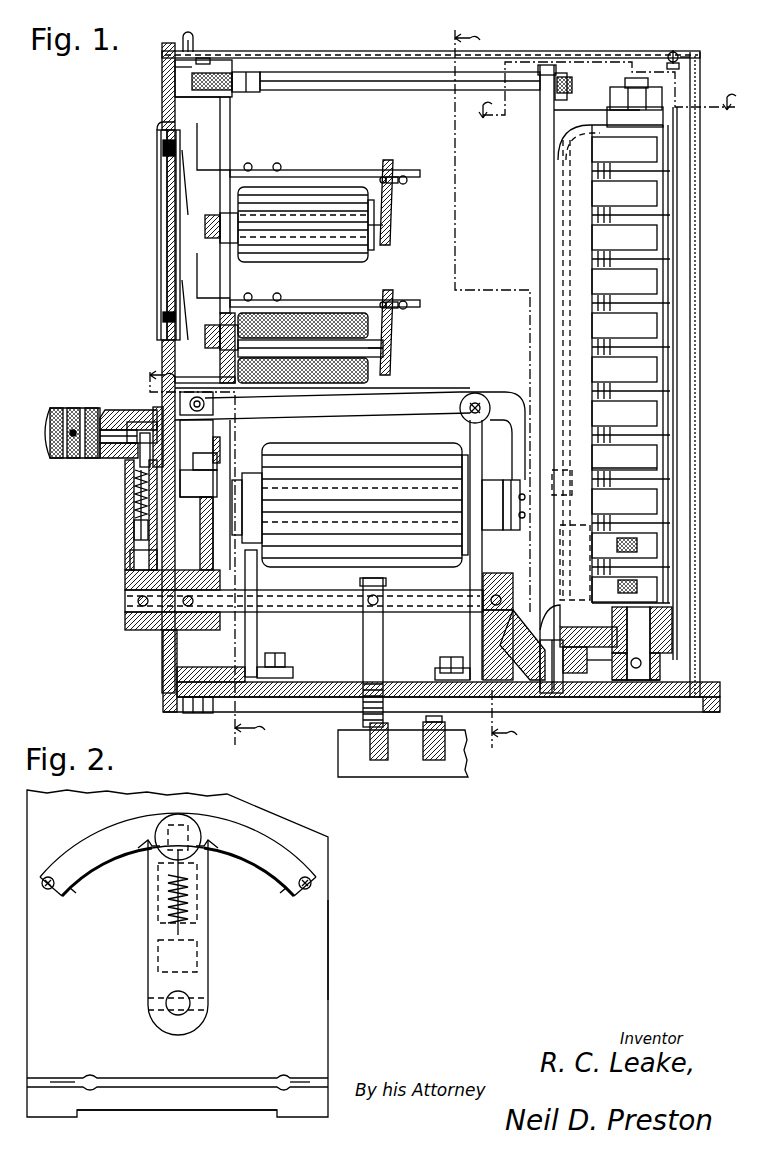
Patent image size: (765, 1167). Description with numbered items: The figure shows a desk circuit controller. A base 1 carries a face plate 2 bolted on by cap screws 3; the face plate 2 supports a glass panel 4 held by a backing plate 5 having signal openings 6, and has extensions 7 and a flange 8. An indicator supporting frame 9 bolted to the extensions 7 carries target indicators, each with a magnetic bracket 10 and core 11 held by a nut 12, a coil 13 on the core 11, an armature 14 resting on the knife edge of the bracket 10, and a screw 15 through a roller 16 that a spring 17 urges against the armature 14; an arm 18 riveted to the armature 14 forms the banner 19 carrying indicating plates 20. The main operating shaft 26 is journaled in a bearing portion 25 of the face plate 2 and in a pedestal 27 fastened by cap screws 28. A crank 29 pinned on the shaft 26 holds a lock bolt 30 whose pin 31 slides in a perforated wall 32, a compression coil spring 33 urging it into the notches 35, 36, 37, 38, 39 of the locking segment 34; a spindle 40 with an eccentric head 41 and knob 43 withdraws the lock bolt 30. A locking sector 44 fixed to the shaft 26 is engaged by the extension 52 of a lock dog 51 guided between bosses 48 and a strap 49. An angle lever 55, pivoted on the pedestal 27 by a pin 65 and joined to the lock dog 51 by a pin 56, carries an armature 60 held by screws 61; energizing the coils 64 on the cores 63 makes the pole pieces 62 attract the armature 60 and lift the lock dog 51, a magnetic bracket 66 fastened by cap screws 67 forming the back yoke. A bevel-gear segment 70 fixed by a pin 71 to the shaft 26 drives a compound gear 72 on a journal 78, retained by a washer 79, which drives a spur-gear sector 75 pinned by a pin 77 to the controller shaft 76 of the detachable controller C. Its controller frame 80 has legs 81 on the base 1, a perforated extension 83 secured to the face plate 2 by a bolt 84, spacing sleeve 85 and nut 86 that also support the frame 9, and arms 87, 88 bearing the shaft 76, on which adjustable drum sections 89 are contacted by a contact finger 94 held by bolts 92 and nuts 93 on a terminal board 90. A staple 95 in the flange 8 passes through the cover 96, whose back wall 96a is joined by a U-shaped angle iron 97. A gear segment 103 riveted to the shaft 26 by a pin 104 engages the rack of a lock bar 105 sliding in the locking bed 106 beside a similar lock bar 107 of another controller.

In FIG. 1, the base 1 is at (338, 690).
In FIG. 2, the base 1 is at (163, 1107).
In FIG. 1, the face plate 2 is at (170, 665).
In FIG. 2, the face plate 2 is at (315, 962).
In FIG. 1, the cap screws 3 is at (197, 723).
In FIG. 1, the glass panel 4 is at (167, 233).
In FIG. 1, the backing plate 5 is at (178, 240).
In FIG. 1, the signal openings 6 is at (157, 297).
In FIG. 1, the extensions 7 is at (204, 350).
In FIG. 1, the flange 8 is at (203, 62).
In FIG. 1, the indicator supporting frame 9 is at (229, 128).
In FIG. 1, the bracket 10 is at (342, 300).
In FIG. 1, the core 11 is at (378, 362).
In FIG. 1, the nut 12 is at (208, 340).
In FIG. 1, the coil 13 is at (302, 320).
In FIG. 1, the armature 14 is at (389, 342).
In FIG. 1, the screw 15 is at (407, 302).
In FIG. 1, the roller 16 is at (386, 302).
In FIG. 1, the spring 17 is at (395, 310).
In FIG. 1, the arm 18 is at (266, 300).
In FIG. 1, the banner 19 is at (185, 310).
In FIG. 1, the indicating plates 20 is at (192, 285).
In FIG. 1, the bearing portion 25 is at (165, 630).
In FIG. 1, the main operating shaft 26 is at (128, 603).
In FIG. 2, the main operating shaft 26 is at (186, 1008).
In FIG. 1, the pedestal 27 is at (478, 566).
In FIG. 1, the cap screws 28 is at (450, 658).
In FIG. 1, the crank 29 is at (130, 576).
In FIG. 2, the crank 29 is at (158, 930).
In FIG. 1, the lock bolt 30 is at (140, 442).
In FIG. 1, the pin 31 is at (135, 487).
In FIG. 1, the perforated wall 32 is at (135, 540).
In FIG. 1, the compression coil spring 33 is at (133, 508).
In FIG. 1, the locking segment 34 is at (157, 410).
In FIG. 2, the locking segment 34 is at (100, 852).
In FIG. 2, the notch 35 is at (72, 887).
In FIG. 2, the notch 36 is at (145, 850).
In FIG. 2, the notch 37 is at (185, 840).
In FIG. 2, the notch 38 is at (213, 850).
In FIG. 2, the notch 39 is at (283, 887).
In FIG. 1, the spindle 40 is at (117, 414).
In FIG. 1, the head 41 is at (124, 414).
In FIG. 1, the operating knob 43 is at (47, 418).
In FIG. 2, the operating knob 43 is at (160, 825).
In FIG. 1, the locking sector 44 is at (214, 562).
In FIG. 1, the bosses 48 is at (214, 463).
In FIG. 1, the strap 49 is at (220, 442).
In FIG. 1, the lock dog 51 is at (213, 422).
In FIG. 1, the extension 52 is at (217, 487).
In FIG. 1, the angle lever 55 is at (431, 406).
In FIG. 1, the pin 56 is at (206, 404).
In FIG. 1, the armature 60 is at (508, 520).
In FIG. 1, the screws 61 is at (526, 515).
In FIG. 1, the pole pieces 62 is at (490, 484).
In FIG. 1, the cores 63 is at (357, 487).
In FIG. 1, the coils 64 is at (295, 456).
In FIG. 1, the pin 65 is at (479, 402).
In FIG. 1, the bracket 66 is at (257, 623).
In FIG. 1, the cap screws 67 is at (276, 661).
In FIG. 1, the bevel-gear segment 70 is at (500, 640).
In FIG. 1, the pin 71 is at (498, 601).
In FIG. 1, the compound gear 72 is at (577, 678).
In FIG. 1, the spur-gear sector 75 is at (600, 675).
In FIG. 1, the controller shaft 76 is at (636, 680).
In FIG. 1, the pin 77 is at (660, 664).
In FIG. 1, the journal 78 is at (552, 694).
In FIG. 1, the washer 79 is at (588, 627).
In FIG. 1, the controller frame 80 is at (540, 212).
In FIG. 1, the legs 81 is at (556, 630).
In FIG. 1, the perforated extension 83 is at (549, 70).
In FIG. 1, the bolt 84 is at (243, 76).
In FIG. 1, the spacing sleeve 85 is at (386, 78).
In FIG. 1, the nut 86 is at (566, 72).
In FIG. 1, the arm 87 is at (645, 115).
In FIG. 1, the arm 88 is at (673, 635).
In FIG. 1, the drum sections 89 is at (655, 400).
In FIG. 1, the terminal board 90 is at (575, 255).
In FIG. 1, the bolts 92 is at (637, 584).
In FIG. 1, the nuts 93 is at (610, 528).
In FIG. 1, the contact finger 94 is at (657, 468).
In FIG. 1, the staple 95 is at (182, 37).
In FIG. 1, the cover 96 is at (320, 51).
In FIG. 1, the sheet metal back wall 96a is at (700, 416).
In FIG. 1, the U-shaped angle iron 97 is at (677, 52).
In FIG. 1, the gear segment 103 is at (374, 656).
In FIG. 1, the pin 104 is at (370, 604).
In FIG. 1, the lock bar 105 is at (380, 740).
In FIG. 1, the locking bed 106 is at (345, 762).
In FIG. 1, the lock bar 107 is at (435, 740).
In FIG. 1, the controller C is at (662, 282).